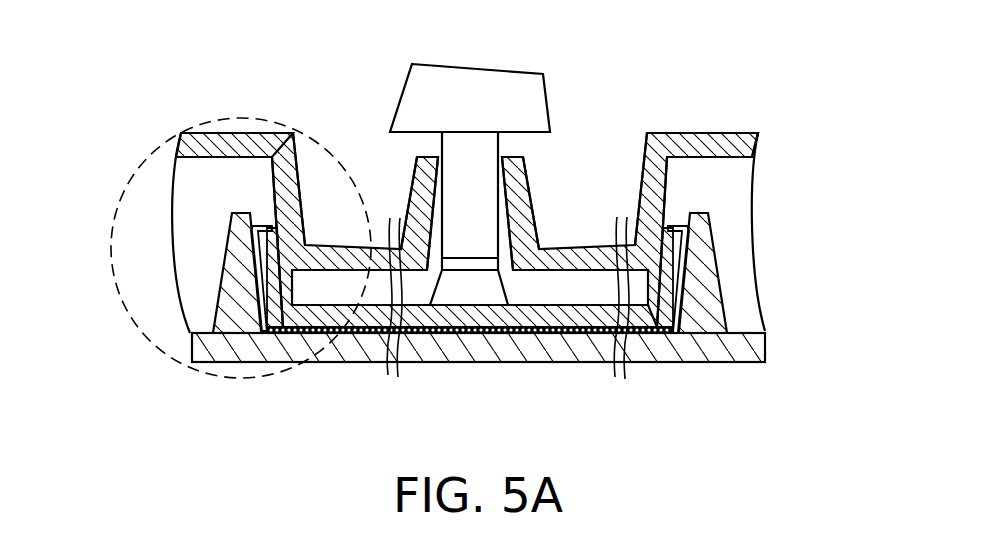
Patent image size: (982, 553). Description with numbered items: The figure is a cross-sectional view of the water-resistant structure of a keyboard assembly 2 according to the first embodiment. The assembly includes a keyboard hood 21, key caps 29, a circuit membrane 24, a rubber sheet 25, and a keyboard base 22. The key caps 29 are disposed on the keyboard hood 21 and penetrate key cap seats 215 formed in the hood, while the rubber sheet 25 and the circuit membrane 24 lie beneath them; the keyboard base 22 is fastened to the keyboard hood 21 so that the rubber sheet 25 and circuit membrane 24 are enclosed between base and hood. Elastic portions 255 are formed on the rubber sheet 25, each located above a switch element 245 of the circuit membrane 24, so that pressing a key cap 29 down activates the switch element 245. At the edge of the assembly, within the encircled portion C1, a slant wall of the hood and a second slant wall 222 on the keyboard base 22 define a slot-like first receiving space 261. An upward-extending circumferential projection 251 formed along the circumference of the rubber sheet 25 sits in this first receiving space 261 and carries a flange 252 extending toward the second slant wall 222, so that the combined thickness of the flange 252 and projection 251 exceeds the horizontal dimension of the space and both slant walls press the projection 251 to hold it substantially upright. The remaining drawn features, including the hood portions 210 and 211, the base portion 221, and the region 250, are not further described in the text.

The keyboard assembly 2 is at (93, 27).
The keyboard hood 21 is at (173, 146).
The top wall 210 is at (203, 158).
The side wall 211 is at (273, 187).
The key cap seat 215 is at (508, 240).
The keyboard base 22 is at (187, 348).
The post 221 is at (245, 294).
The second slant wall 222 is at (212, 329).
The circuit membrane 24 is at (258, 331).
The switch element 245 is at (477, 334).
The rubber sheet 25 is at (296, 295).
The break region 250 is at (416, 363).
The upward-extending circumferential projection 251 is at (273, 226).
The flange 252 is at (250, 232).
The elastic portion 255 is at (506, 288).
The first receiving space 261 is at (628, 215).
The key cap 29 is at (485, 64).
The encircled portion C1 is at (241, 388).